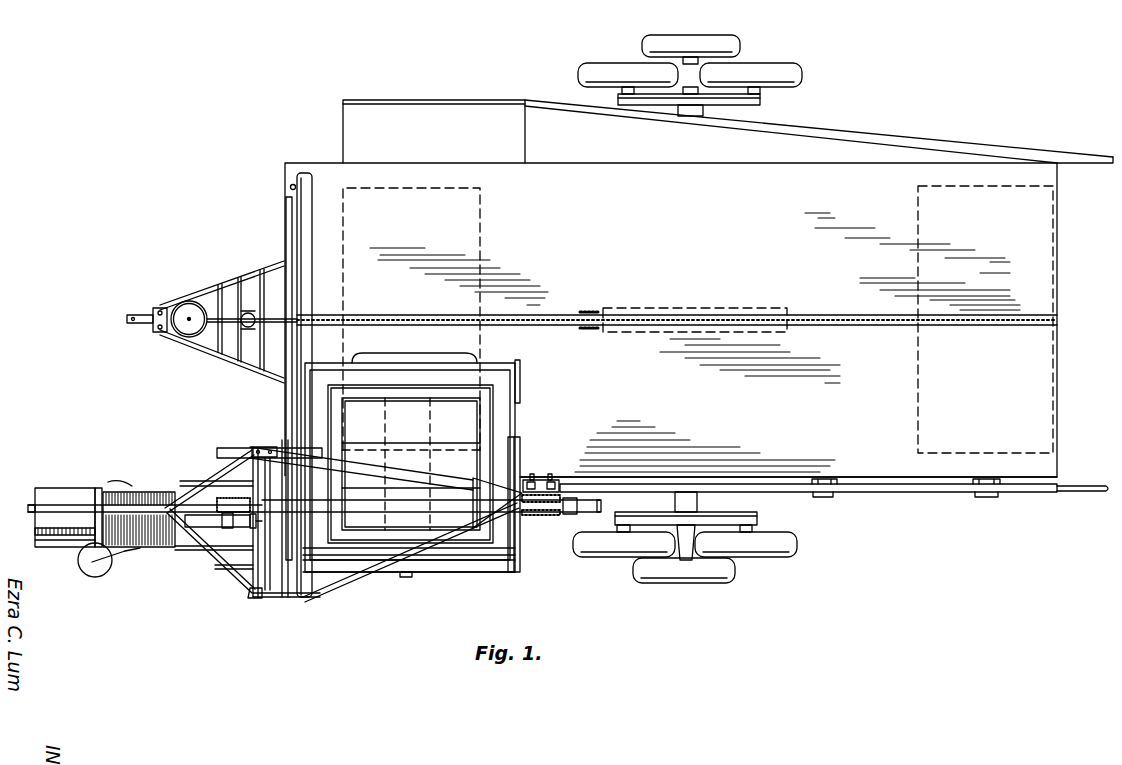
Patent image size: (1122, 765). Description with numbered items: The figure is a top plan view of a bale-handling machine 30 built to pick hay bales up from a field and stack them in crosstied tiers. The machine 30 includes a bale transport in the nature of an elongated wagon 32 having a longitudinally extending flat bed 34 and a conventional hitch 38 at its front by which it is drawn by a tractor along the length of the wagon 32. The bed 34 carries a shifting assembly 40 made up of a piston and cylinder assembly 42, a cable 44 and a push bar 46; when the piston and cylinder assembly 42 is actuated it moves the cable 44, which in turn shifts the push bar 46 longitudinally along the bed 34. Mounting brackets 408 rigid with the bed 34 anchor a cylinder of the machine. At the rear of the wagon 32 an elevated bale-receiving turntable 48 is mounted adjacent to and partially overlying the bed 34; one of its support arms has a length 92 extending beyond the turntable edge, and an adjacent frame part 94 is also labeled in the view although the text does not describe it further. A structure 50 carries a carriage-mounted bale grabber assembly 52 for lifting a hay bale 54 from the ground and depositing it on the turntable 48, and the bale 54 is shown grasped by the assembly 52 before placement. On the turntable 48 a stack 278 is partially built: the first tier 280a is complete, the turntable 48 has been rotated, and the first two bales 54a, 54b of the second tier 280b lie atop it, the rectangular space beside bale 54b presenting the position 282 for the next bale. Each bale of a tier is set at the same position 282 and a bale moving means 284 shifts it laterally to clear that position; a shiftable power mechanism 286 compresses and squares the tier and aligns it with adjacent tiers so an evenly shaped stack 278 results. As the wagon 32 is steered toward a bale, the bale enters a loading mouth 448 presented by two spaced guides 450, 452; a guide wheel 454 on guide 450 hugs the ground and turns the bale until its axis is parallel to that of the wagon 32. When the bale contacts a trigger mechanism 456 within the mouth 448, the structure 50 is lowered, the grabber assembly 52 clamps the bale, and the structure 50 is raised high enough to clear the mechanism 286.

The bale-handling machine 30 is at (340, 136).
The elongated wagon 32 is at (930, 497).
The flat bed 34 is at (671, 320).
The hitch 38 is at (210, 285).
The shifting assembly 40 is at (592, 310).
The piston and cylinder assembly 42 is at (643, 310).
The cable 44 is at (818, 315).
The push bar 46 is at (288, 220).
The turntable 48 is at (487, 410).
The structure 50 is at (198, 555).
The carriage-mounted bale grabber assembly 52 is at (98, 485).
The hay bale 54 is at (62, 547).
The first bale of tier 54a is at (423, 418).
The second bale of tier 54b is at (468, 457).
The arm length 92 is at (407, 577).
The top frame member 94 is at (275, 440).
The stack 278 is at (475, 535).
The first tier 280a is at (353, 532).
The second tier 280b is at (367, 397).
The bale position 282 is at (408, 493).
The bale moving means 284 is at (450, 558).
The compressing and squaring mechanism 286 is at (507, 358).
The mounting brackets 408 is at (284, 185).
The loading mouth 448 is at (52, 485).
The guide 450 is at (120, 552).
The guide 452 is at (152, 492).
The guide wheel 454 is at (95, 578).
The trigger mechanism 456 is at (242, 548).